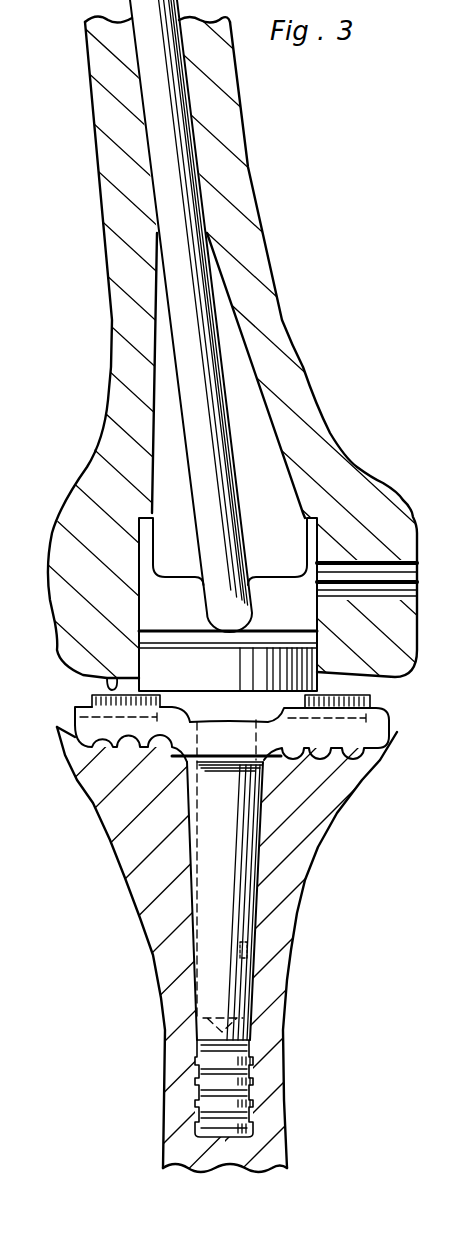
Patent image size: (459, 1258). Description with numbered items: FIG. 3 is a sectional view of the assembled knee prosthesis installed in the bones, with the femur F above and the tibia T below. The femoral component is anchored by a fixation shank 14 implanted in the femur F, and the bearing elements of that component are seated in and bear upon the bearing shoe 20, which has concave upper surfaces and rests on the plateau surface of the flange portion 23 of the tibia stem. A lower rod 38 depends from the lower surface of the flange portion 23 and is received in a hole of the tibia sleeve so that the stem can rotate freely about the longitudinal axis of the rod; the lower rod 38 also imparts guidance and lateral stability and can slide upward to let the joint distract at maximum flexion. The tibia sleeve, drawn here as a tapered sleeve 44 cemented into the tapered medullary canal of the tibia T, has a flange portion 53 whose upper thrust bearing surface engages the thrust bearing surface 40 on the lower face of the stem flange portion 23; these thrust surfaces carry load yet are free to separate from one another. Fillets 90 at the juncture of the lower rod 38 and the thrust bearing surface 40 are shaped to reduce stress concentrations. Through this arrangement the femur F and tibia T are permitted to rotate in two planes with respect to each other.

The femur F is at (246, 163).
The fixation shank 14 is at (227, 343).
The bearing shoe 20 is at (303, 662).
The flange portion 23 is at (110, 680).
The thrust bearing surface 40 is at (326, 750).
The flange portion 53 is at (363, 727).
The fillets 90 is at (267, 713).
The sleeve 44 is at (257, 880).
The lower rod 38 is at (247, 935).
The tibia T is at (285, 1013).